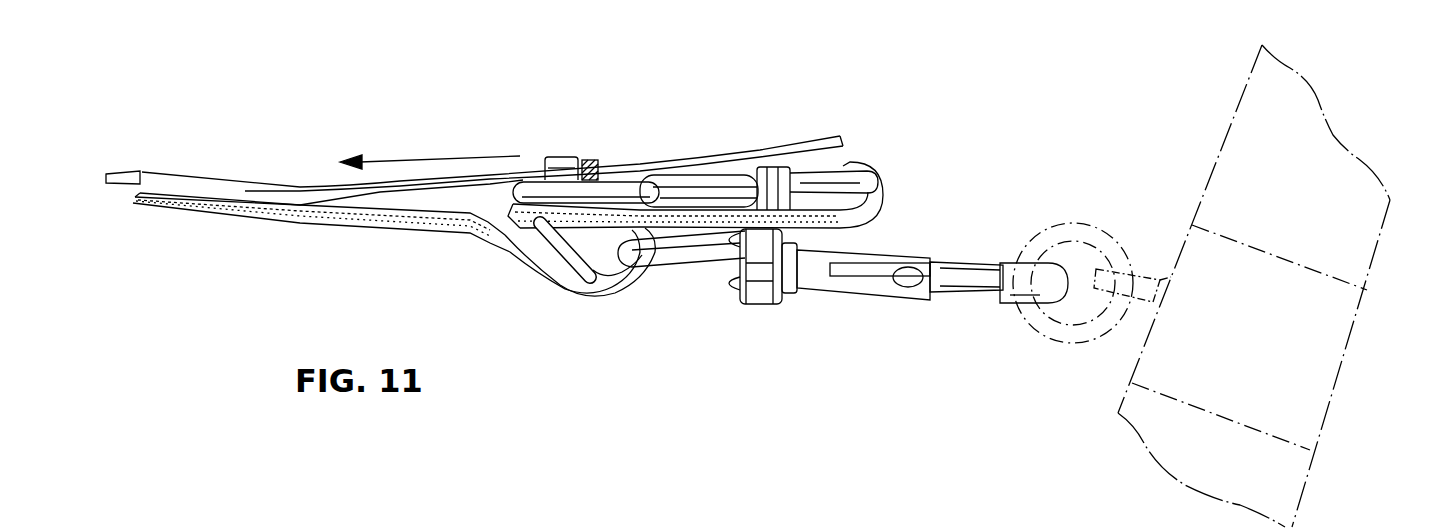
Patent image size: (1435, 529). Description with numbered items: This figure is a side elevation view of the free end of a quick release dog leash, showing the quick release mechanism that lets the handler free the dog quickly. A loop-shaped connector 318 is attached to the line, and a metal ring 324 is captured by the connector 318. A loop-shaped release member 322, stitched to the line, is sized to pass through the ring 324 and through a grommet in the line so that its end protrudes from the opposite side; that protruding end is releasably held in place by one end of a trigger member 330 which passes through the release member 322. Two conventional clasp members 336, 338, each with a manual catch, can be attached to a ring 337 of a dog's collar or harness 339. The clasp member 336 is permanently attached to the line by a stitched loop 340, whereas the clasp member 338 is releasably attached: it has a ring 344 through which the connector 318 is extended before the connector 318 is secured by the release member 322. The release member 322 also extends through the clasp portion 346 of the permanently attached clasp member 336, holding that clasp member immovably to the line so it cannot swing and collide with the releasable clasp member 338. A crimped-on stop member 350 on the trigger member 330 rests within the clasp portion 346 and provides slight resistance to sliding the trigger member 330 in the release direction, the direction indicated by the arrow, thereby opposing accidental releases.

The loop-shaped connector 318 is at (563, 260).
The release member 322 is at (591, 160).
The metal ring 324 is at (565, 250).
The trigger member 330 is at (762, 151).
The clasp member 336 is at (692, 192).
The ring 337 is at (1070, 227).
The clasp member 338 is at (868, 302).
The harness 339 is at (1228, 133).
The stitched loop 340 is at (882, 172).
The ring 344 is at (686, 268).
The clasp portion 346 is at (532, 192).
The stop member 350 is at (562, 157).